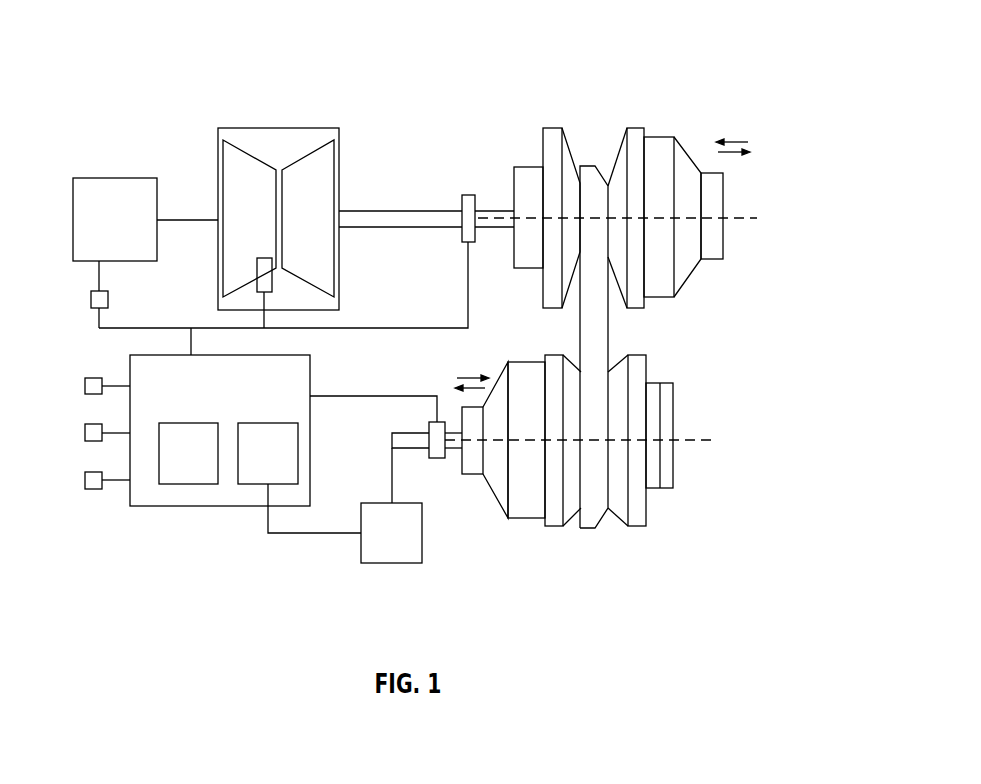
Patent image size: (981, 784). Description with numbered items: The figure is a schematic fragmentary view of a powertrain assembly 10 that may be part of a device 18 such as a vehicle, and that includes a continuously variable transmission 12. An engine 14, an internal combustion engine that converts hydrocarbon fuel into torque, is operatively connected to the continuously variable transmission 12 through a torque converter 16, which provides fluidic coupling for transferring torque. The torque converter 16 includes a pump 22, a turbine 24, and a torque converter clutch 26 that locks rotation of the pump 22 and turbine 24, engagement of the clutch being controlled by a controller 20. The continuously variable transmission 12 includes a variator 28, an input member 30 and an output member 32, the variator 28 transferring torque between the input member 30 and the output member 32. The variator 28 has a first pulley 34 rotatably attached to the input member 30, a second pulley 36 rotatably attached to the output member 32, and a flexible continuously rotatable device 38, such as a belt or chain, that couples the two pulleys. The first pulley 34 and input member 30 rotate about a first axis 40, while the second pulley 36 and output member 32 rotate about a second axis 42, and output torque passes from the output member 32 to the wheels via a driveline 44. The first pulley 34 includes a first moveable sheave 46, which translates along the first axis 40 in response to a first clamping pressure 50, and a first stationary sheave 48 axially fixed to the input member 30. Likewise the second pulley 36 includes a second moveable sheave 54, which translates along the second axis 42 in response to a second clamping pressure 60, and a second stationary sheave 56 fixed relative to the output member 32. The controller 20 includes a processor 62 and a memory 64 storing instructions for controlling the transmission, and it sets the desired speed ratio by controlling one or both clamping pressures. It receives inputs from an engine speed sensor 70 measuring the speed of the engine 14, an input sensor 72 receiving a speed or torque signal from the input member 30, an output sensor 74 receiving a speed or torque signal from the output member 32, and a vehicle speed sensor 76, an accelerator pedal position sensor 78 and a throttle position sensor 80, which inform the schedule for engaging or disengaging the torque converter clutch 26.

The powertrain assembly 10 is at (117, 88).
The continuously variable transmission 12 is at (605, 32).
The engine 14 is at (100, 178).
The torque converter 16 is at (217, 158).
The device 18 is at (284, 198).
The controller 20 is at (160, 508).
The pump 22 is at (250, 156).
The turbine 24 is at (339, 170).
The torque converter clutch 26 is at (266, 258).
The variator 28 is at (499, 97).
The input member 30 is at (512, 208).
The output member 32 is at (392, 438).
The first pulley 34 is at (651, 188).
The second pulley 36 is at (579, 464).
The flexible continuously rotatable device 38 is at (609, 343).
The first axis 40 is at (733, 217).
The second axis 42 is at (693, 438).
The driveline 44 is at (358, 548).
The first moveable sheave 46 is at (637, 128).
The first stationary sheave 48 is at (553, 128).
The first clamping pressure 50 is at (727, 136).
The second moveable sheave 54 is at (553, 527).
The second stationary sheave 56 is at (640, 527).
The second clamping pressure 60 is at (483, 371).
The processor 62 is at (190, 423).
The memory 64 is at (270, 423).
The engine speed sensor 70 is at (91, 298).
The input sensor 72 is at (467, 195).
The output sensor 74 is at (437, 458).
The vehicle speed sensor 76 is at (85, 383).
The accelerator pedal position sensor 78 is at (85, 430).
The throttle position sensor 80 is at (85, 477).